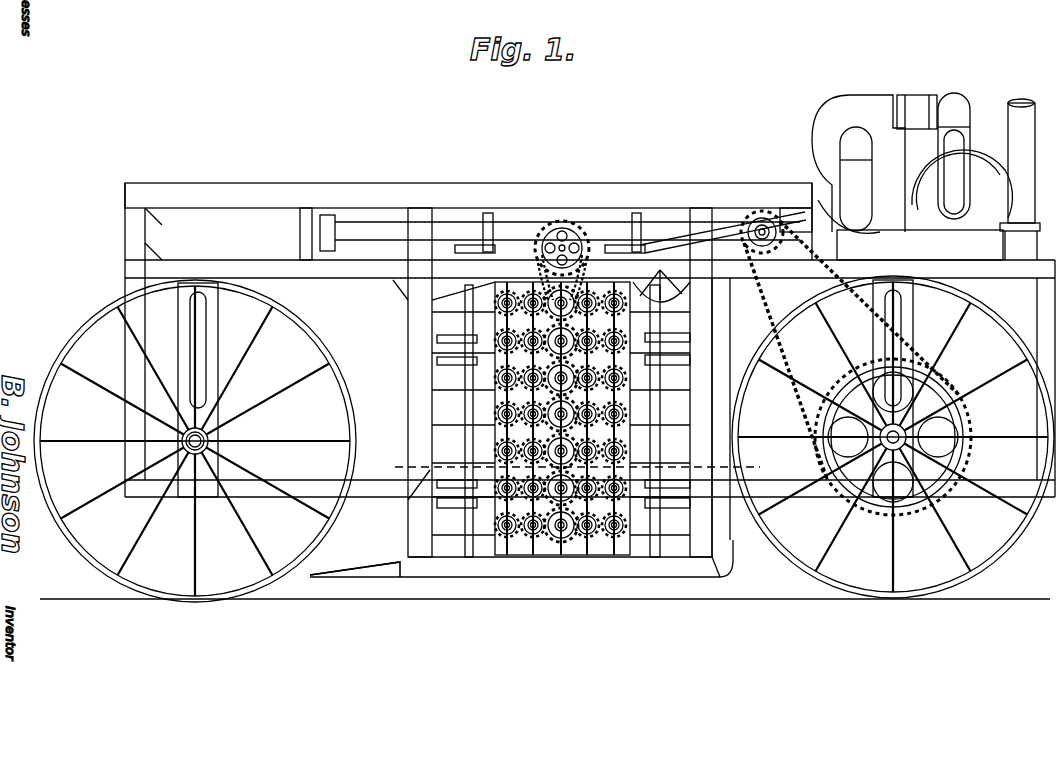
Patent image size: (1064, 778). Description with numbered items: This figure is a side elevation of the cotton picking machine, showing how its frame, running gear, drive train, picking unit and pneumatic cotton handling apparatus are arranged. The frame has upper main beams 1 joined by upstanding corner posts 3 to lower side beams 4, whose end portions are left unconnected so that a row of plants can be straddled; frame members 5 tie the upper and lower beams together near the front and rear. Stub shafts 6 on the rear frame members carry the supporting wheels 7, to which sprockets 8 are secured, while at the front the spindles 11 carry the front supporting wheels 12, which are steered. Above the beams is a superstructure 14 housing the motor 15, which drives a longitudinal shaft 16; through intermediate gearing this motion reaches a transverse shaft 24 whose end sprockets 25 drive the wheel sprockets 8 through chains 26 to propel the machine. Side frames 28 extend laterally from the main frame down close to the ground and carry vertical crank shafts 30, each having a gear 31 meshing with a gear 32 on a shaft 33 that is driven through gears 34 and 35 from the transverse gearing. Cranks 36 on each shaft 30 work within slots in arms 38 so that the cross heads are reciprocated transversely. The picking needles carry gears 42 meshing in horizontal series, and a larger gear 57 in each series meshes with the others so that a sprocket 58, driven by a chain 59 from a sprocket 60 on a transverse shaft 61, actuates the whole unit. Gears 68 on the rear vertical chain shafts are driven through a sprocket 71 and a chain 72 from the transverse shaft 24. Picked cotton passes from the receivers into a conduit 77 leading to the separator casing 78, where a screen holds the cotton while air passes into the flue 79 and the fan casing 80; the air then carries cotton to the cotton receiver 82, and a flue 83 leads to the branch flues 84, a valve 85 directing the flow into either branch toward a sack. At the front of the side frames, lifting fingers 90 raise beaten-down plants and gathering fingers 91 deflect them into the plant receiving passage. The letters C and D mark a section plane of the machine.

The upper main beams 1 is at (338, 238).
The corner posts 3 is at (125, 333).
The lower side beams 4 is at (1010, 502).
The frame members 5 is at (215, 313).
The stub shafts 6 is at (912, 430).
The supporting wheels 7 is at (1032, 566).
The sprockets 8 is at (905, 513).
The spindles 11 is at (210, 437).
The front supporting wheels 12 is at (245, 595).
The superstructure 14 is at (455, 200).
The motor 15 is at (258, 222).
The longitudinal shaft 16 is at (390, 225).
The transverse shaft 24 is at (766, 228).
The sprockets 25 is at (762, 225).
The chains 26 is at (780, 348).
The side frames 28 is at (418, 388).
The vertical shafts 30 is at (468, 400).
The gear 31 is at (488, 212).
The gear 32 is at (500, 215).
The shaft 33 is at (535, 222).
The gear 34 is at (575, 232).
The gear 35 is at (562, 222).
The cranks 36 is at (435, 338).
The arms 38 is at (440, 350).
The gears 42 is at (533, 538).
The larger gear 57 is at (565, 540).
The sprocket 58 is at (535, 262).
The chain 59 is at (590, 262).
The sprocket 60 is at (545, 235).
The transverse shaft 61 is at (598, 240).
The gears 68 is at (661, 301).
The sprocket 71 is at (705, 228).
The chain 72 is at (722, 215).
The conduit 77 is at (850, 150).
The separator casing 78 is at (845, 100).
The flue 79 is at (917, 100).
The fan casing 80 is at (975, 175).
The cotton receiver 82 is at (880, 225).
The flue 83 is at (965, 245).
The branch flues 84 is at (1025, 110).
The valve 85 is at (1022, 262).
The lifting fingers 90 is at (355, 580).
The gathering fingers 91 is at (466, 318).
The section line C is at (400, 470).
The section line D is at (745, 468).